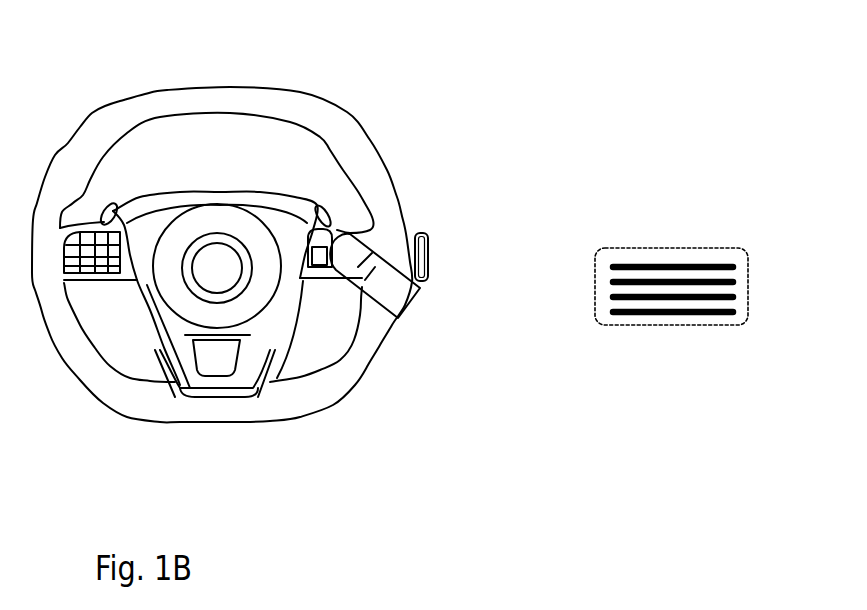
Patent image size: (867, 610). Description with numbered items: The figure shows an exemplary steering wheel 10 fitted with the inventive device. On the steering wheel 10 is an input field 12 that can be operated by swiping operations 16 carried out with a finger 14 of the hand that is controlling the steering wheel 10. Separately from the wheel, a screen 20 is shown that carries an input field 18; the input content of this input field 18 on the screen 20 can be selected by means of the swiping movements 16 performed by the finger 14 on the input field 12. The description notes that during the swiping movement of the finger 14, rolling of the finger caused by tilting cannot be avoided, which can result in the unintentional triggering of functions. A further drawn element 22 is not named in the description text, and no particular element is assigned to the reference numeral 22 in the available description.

The steering wheel 10 is at (388, 212).
The input field 12 is at (334, 227).
The finger 14 is at (418, 299).
The swiping operations 16 is at (429, 250).
The input field 18 is at (677, 263).
The screen 20 is at (748, 303).
The left operating element 22 is at (92, 237).